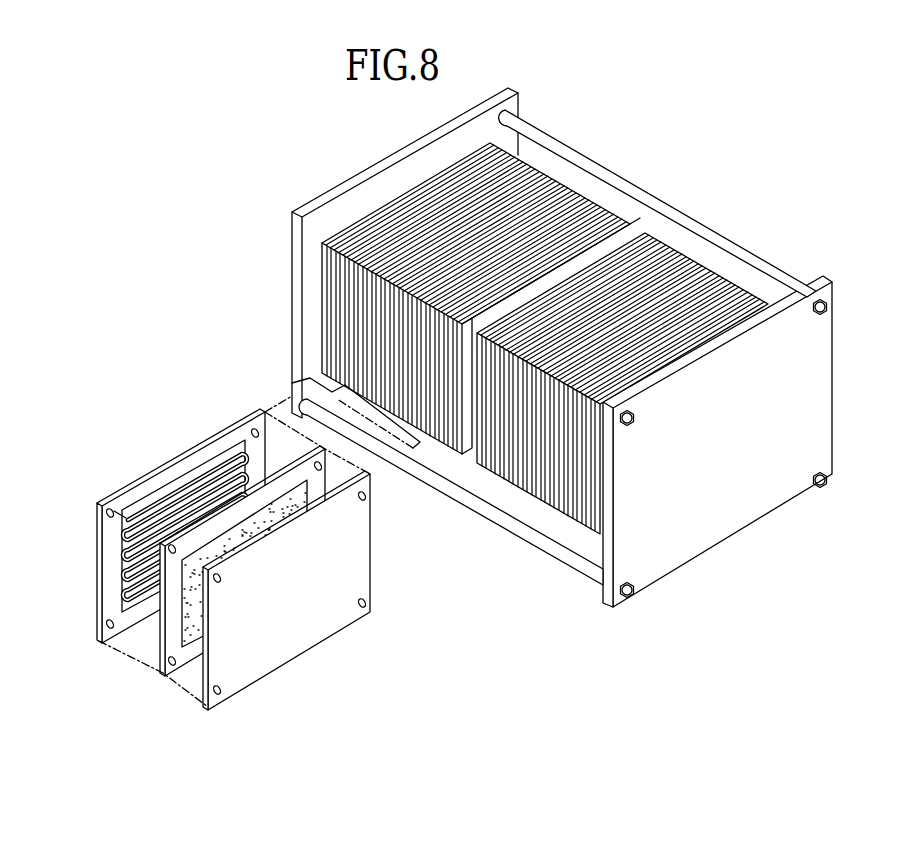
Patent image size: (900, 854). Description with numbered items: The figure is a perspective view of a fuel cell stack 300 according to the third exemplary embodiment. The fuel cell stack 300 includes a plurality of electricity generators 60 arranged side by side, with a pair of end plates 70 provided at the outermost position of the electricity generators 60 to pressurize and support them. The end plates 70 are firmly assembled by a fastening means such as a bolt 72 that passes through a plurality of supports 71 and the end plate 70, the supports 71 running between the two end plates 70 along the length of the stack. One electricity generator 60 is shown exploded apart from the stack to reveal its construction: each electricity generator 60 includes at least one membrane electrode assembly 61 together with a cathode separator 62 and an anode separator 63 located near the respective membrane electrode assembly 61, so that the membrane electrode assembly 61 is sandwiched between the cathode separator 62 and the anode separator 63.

The fuel cell stack 300 is at (712, 134).
The end plate 70 is at (367, 176).
The support 71 is at (741, 252).
The bolt 72 is at (637, 593).
The electricity generator 60 is at (194, 566).
The membrane electrode assembly 61 is at (163, 647).
The cathode separator 62 is at (96, 610).
The anode separator 63 is at (252, 602).